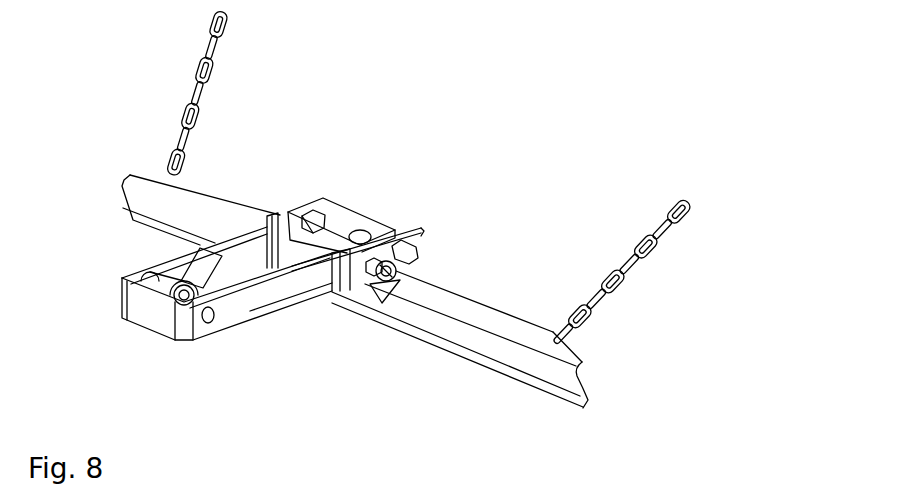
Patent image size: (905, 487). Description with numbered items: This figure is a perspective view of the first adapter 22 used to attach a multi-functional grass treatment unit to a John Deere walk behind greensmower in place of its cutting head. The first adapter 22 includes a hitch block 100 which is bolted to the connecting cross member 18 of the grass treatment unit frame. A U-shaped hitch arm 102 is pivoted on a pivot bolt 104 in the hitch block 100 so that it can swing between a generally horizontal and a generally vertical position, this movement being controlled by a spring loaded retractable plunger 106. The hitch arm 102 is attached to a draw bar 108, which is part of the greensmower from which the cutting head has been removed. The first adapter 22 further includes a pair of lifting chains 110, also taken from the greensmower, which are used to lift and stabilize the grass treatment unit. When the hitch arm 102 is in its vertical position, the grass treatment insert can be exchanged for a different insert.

The connecting cross member 18 is at (480, 298).
The first adapter 22 is at (400, 177).
The hitch block 100 is at (350, 220).
The hitch arm 102 is at (236, 303).
The pivot bolt 104 is at (418, 248).
The spring loaded retractable plunger 106 is at (327, 326).
The draw bar 108 is at (132, 268).
The lifting chains 110 is at (473, 178).